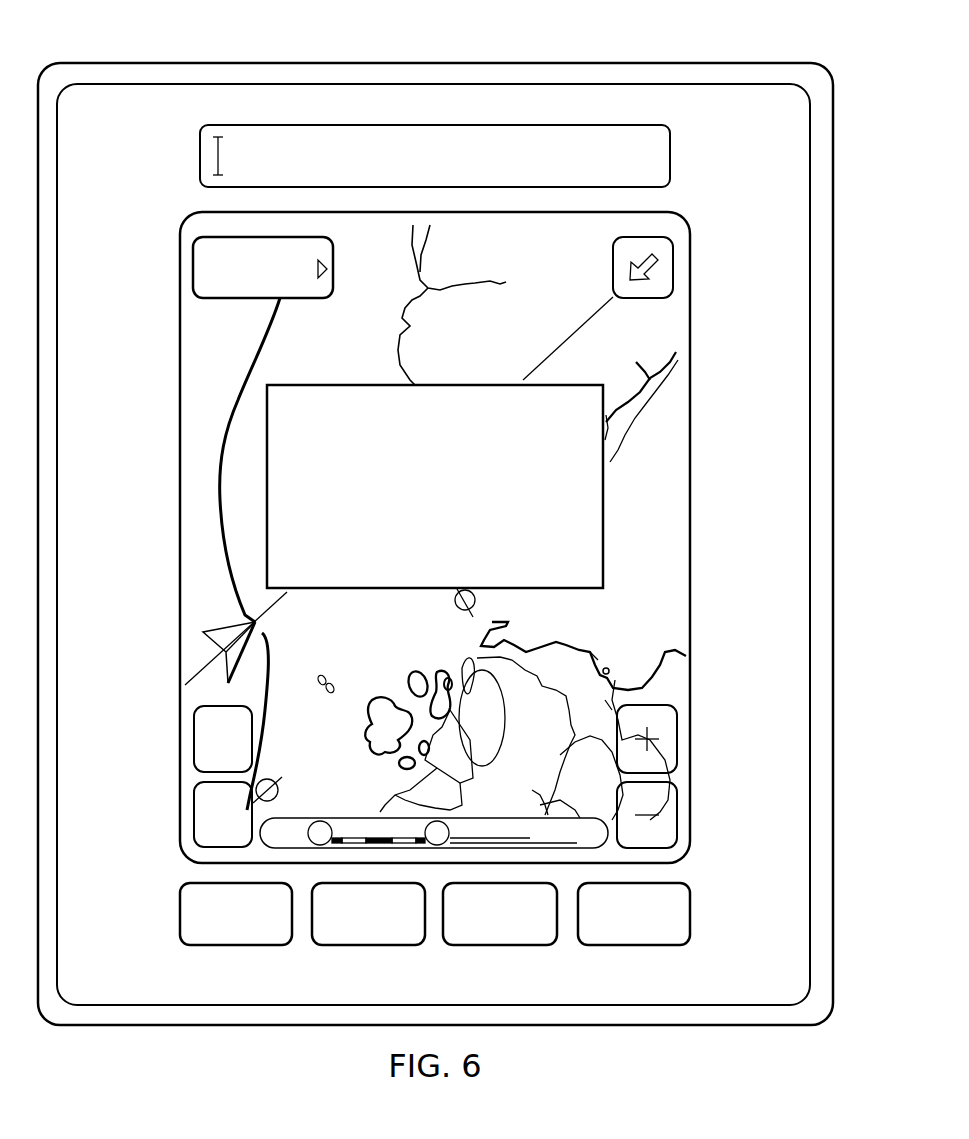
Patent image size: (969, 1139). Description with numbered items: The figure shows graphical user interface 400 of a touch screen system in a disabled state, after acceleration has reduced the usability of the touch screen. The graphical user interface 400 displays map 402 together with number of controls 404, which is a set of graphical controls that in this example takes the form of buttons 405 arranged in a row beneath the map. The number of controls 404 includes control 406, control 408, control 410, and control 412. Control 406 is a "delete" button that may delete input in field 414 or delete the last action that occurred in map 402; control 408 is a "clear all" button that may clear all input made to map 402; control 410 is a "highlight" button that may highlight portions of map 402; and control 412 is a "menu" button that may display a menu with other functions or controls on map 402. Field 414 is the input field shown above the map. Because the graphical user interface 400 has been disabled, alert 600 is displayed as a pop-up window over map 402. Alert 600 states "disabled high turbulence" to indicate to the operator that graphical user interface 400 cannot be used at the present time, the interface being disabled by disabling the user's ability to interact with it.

The graphical user interface 400 is at (584, 58).
The map 402 is at (468, 537).
The number of controls 404 is at (152, 887).
The buttons 405 is at (152, 916).
The control 406 is at (238, 946).
The control 408 is at (368, 946).
The control 410 is at (500, 946).
The control 412 is at (634, 946).
The field 414 is at (670, 160).
The alert 600 is at (415, 530).